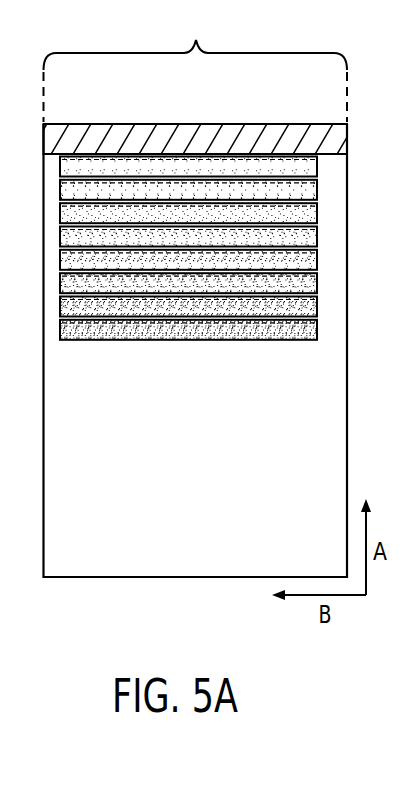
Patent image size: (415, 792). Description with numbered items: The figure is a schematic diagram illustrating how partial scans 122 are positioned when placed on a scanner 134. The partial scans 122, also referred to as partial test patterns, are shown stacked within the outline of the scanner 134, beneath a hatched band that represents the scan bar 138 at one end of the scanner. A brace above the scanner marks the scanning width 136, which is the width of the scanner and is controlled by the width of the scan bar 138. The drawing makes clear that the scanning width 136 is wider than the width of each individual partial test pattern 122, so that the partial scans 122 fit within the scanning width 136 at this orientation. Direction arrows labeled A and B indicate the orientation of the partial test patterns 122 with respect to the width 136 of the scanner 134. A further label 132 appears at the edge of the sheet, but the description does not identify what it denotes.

The partial scans 122 is at (217, 350).
The scanner 134 is at (238, 580).
The scanning width 136 is at (196, 63).
The scan bar 138 is at (55, 139).
The housing wall 132 is at (414, 176).